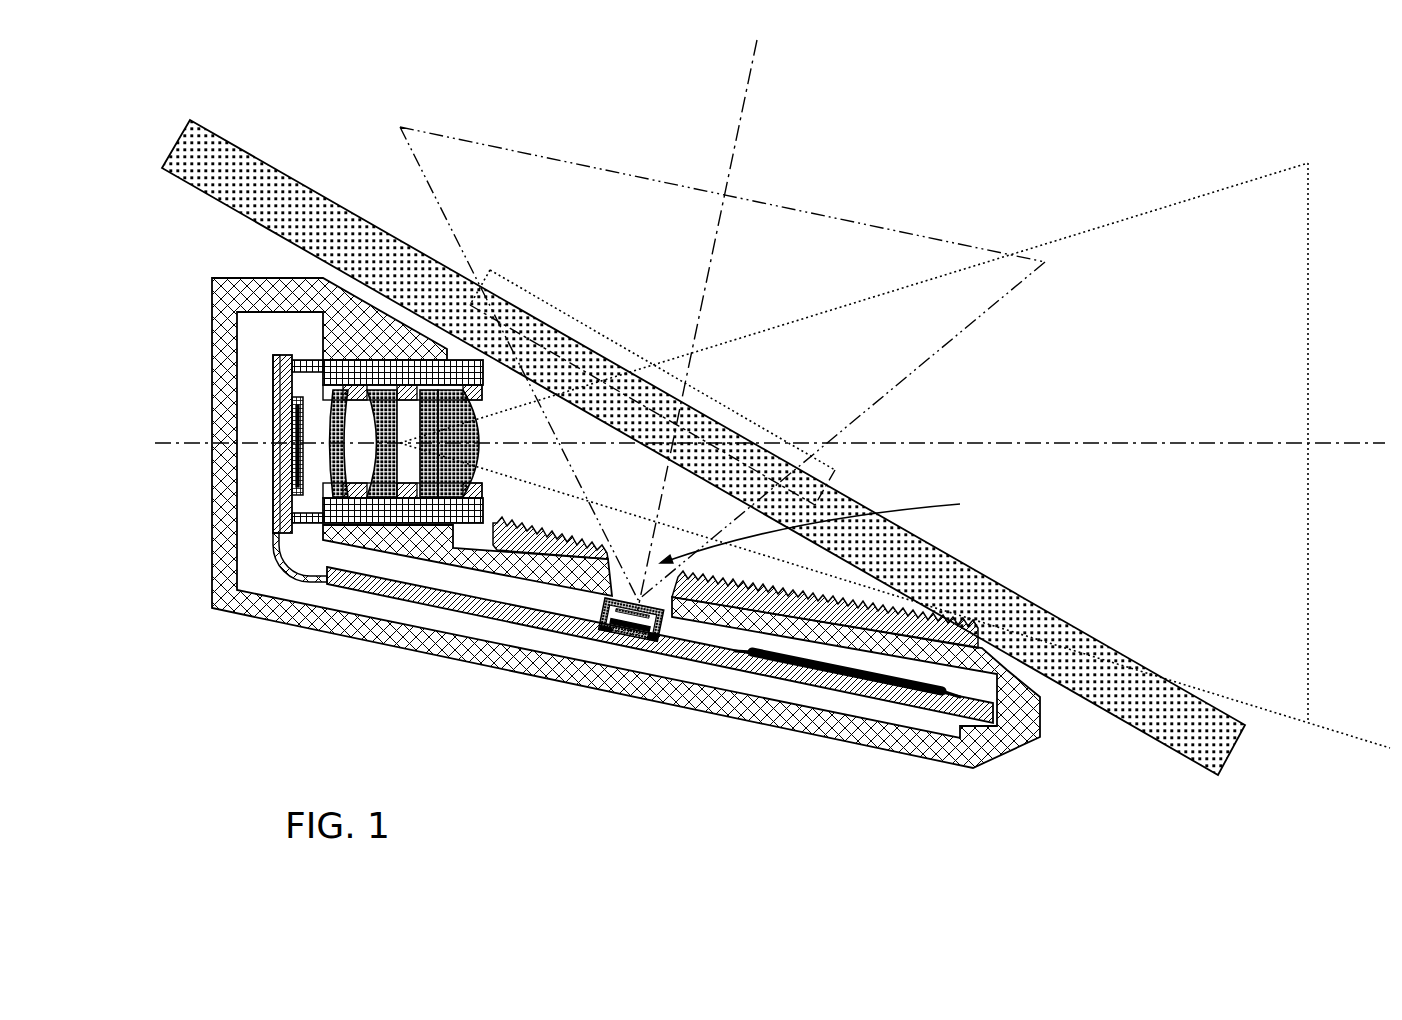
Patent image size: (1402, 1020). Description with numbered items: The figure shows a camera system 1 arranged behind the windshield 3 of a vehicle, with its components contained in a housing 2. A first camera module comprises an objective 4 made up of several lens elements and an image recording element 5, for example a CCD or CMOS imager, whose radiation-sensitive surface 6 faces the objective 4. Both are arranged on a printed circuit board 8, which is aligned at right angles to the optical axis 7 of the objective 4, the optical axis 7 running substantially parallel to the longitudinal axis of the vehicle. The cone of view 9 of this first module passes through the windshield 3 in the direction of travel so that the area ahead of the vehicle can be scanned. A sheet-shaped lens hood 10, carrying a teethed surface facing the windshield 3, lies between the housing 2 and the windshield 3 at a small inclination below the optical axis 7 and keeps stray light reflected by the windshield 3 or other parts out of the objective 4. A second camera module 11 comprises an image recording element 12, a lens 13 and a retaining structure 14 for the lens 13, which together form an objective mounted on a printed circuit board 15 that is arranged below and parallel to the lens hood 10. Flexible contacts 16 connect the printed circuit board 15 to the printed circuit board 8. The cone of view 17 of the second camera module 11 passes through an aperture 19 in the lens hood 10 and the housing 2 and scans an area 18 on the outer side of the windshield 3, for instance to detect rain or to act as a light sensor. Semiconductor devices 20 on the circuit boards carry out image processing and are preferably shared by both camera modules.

The camera system 1 is at (650, 505).
The housing 2 is at (272, 292).
The windshield 3 is at (200, 155).
The objective 4 is at (334, 543).
The image recording element 5 is at (287, 490).
The surface 6 is at (298, 436).
The optical axis 7 is at (1093, 443).
The printed circuit board 8 is at (283, 372).
The cone of view 9 is at (1153, 210).
The lens hood 10 is at (923, 623).
The second camera module 11 is at (678, 627).
The image recording element 12 is at (622, 636).
The lens 13 is at (594, 636).
The retaining structure 14 is at (624, 680).
The printed circuit board 15 is at (453, 595).
The flexible contacts 16 is at (285, 560).
The cone of view 17 is at (863, 222).
The area 18 is at (747, 418).
The aperture 19 is at (828, 527).
The semiconductor devices 20 is at (978, 644).